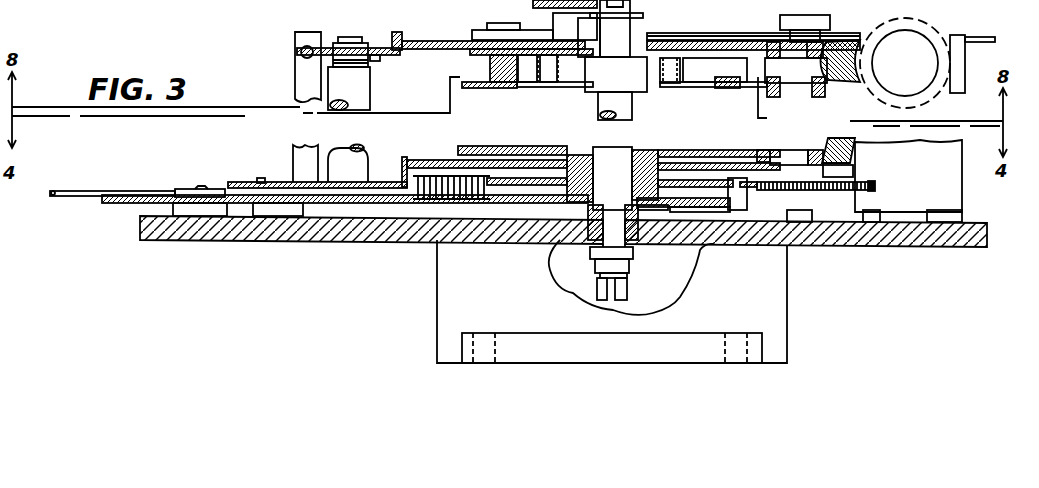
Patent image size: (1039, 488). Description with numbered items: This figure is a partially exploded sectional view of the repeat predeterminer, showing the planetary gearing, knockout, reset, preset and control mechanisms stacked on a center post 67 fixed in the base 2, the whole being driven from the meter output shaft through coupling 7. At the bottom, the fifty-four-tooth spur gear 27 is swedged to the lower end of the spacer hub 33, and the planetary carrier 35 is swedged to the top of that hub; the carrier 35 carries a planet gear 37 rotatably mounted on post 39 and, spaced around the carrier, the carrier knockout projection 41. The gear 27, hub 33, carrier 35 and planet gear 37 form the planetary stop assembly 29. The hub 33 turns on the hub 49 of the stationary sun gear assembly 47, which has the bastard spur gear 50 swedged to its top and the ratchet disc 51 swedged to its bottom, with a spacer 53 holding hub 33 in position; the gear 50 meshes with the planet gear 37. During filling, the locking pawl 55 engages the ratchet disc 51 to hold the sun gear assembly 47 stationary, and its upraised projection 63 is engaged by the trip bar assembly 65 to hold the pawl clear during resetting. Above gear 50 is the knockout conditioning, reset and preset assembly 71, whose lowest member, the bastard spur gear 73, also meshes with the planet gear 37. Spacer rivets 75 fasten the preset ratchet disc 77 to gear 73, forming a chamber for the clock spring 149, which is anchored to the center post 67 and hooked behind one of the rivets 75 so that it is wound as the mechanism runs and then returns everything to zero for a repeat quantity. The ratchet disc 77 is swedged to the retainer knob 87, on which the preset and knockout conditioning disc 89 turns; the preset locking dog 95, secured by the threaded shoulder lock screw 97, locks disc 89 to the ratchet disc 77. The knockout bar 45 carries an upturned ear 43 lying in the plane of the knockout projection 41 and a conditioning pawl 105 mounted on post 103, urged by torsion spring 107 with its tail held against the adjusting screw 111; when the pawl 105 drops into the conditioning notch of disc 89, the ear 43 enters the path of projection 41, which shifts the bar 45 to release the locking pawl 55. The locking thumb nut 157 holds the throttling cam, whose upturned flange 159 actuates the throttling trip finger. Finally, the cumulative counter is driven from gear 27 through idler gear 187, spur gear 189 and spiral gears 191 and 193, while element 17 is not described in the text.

The base 2 is at (162, 232).
The coupling 7 is at (625, 290).
The arm 17 is at (960, 38).
The spur gear 27 is at (688, 188).
The planetary stop assembly 29 is at (710, 147).
The spacer hub 33 is at (612, 195).
The planetary carrier 35 is at (707, 162).
The planet gear 37 is at (774, 147).
The post 39 is at (800, 153).
The carrier knockout projection 41 is at (372, 133).
The upturned ear 43 is at (403, 158).
The knockout bar 45 is at (342, 165).
The stationary sun gear assembly 47 is at (554, 148).
The hub 49 is at (598, 150).
The spur gear 50 is at (655, 149).
The ratchet disc 51 is at (686, 211).
The spacer 53 is at (644, 210).
The locking pawl 55 is at (412, 203).
The upraised projection 63 is at (258, 178).
The trip bar assembly 65 is at (278, 173).
The center post 67 is at (590, 250).
The knockout conditioning, reset, and preset assembly 71 is at (710, 36).
The spur gear 73 is at (470, 89).
The spacer rivets 75 is at (492, 68).
The preset ratchet disc 77 is at (462, 73).
The retainer knob 87 is at (648, 18).
The preset and knockout conditioning disc 89 is at (455, 40).
The preset locking dog 95 is at (767, 58).
The threaded shoulder lock screw 97 is at (808, 18).
The post 103 is at (363, 88).
The conditioning pawl 105 is at (385, 47).
The torsion spring 107 is at (381, 58).
The screw 111 is at (295, 64).
The clock spring 149 is at (663, 84).
The locking thumb nut 157 is at (545, 28).
The upturned flange 159 is at (481, 26).
The idler gear 187 is at (783, 192).
The spur gear 189 is at (873, 191).
The spiral gear 191 is at (860, 63).
The spiral gear 193 is at (900, 18).